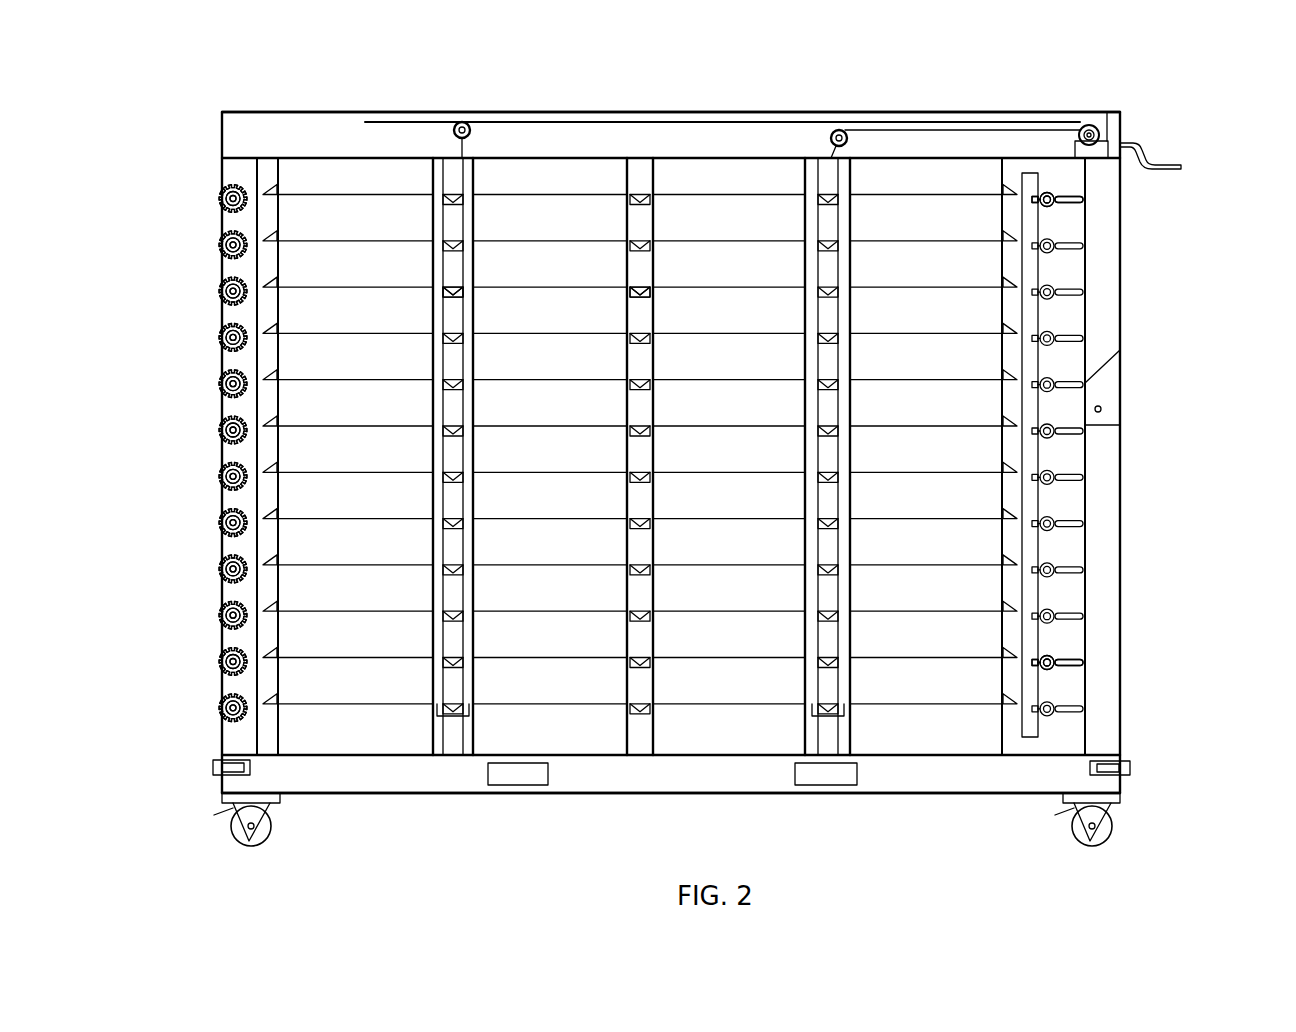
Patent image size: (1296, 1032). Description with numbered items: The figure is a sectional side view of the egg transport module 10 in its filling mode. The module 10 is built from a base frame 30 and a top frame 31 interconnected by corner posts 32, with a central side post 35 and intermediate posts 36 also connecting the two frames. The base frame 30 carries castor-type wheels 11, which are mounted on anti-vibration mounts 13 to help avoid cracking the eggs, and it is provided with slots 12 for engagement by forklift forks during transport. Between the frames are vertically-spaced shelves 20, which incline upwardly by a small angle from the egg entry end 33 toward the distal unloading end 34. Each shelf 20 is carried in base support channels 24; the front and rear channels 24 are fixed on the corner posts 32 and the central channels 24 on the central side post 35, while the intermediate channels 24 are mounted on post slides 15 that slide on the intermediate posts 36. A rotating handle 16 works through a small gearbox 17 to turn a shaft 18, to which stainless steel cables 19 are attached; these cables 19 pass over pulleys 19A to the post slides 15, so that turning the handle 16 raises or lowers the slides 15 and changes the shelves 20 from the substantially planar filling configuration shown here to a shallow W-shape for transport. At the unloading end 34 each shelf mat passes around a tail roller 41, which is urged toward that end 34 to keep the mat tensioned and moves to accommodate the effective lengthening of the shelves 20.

The egg transport module 10 is at (1185, 281).
The castor-type wheels 11 is at (1103, 829).
The slots 12 is at (512, 786).
The anti-vibration mounts 13 is at (1122, 799).
The post slides 15 is at (480, 186).
The rotating handle 16 is at (1186, 167).
The gearbox 17 is at (1097, 150).
The shaft 18 is at (1088, 126).
The stainless steel cables 19 is at (978, 122).
The pulleys 19A is at (462, 121).
The shelves 20 is at (318, 200).
The base support channels 24 is at (632, 296).
The base frame 30 is at (913, 772).
The top frame 31 is at (247, 138).
The corner posts 32 is at (243, 452).
The egg entry end 33 is at (200, 659).
The distal unloading end 34 is at (1144, 386).
The central side post 35 is at (656, 188).
The intermediate posts 36 is at (438, 158).
The tail roller 41 is at (1062, 659).